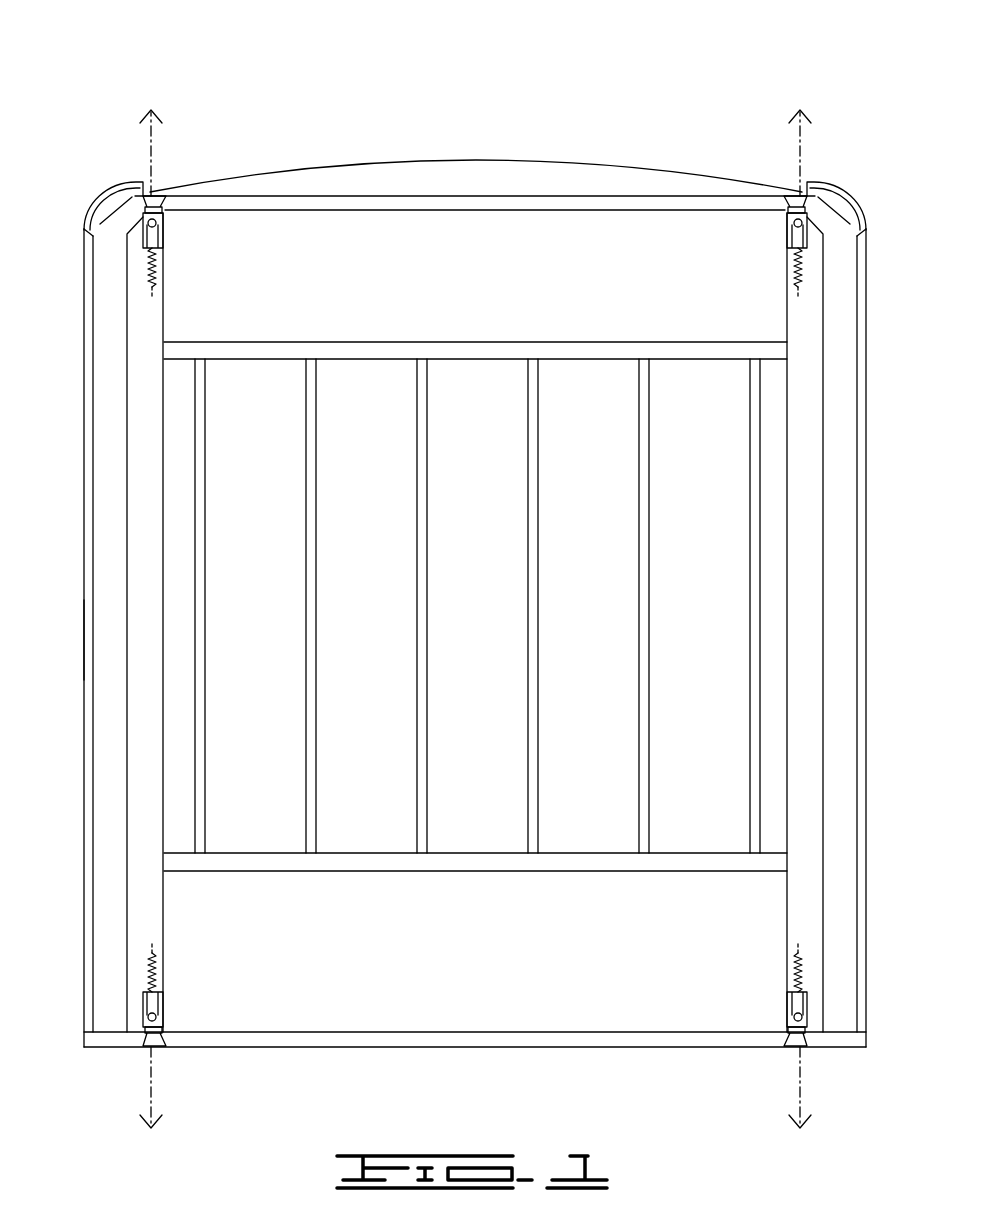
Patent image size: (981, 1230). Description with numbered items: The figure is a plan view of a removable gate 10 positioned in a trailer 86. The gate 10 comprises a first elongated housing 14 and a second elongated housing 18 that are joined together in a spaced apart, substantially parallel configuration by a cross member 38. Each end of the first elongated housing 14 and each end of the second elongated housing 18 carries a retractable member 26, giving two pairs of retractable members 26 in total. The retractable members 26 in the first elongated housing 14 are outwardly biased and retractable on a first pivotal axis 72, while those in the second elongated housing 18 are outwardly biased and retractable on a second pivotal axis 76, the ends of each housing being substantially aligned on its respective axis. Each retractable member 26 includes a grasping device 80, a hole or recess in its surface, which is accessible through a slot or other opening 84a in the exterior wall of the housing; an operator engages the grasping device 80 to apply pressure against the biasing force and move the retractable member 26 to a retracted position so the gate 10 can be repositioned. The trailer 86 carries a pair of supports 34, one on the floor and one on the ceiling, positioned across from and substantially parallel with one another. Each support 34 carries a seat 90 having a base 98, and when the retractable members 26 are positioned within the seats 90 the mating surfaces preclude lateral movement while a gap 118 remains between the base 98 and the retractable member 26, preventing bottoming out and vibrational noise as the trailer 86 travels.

The removable gate 10 is at (322, 92).
The first elongated housing 14 is at (125, 340).
The second elongated housing 18 is at (830, 378).
The retractable member 26 is at (125, 246).
The support 34 is at (475, 212).
The cross member 38 is at (573, 342).
The first pivotal axis 72 is at (150, 620).
The second pivotal axis 76 is at (799, 622).
The grasping device 80 is at (158, 225).
The slot or opening 84a is at (157, 242).
The trailer 86 is at (83, 637).
The seat 90 is at (130, 212).
The base 98 is at (140, 180).
The gap 118 is at (168, 183).